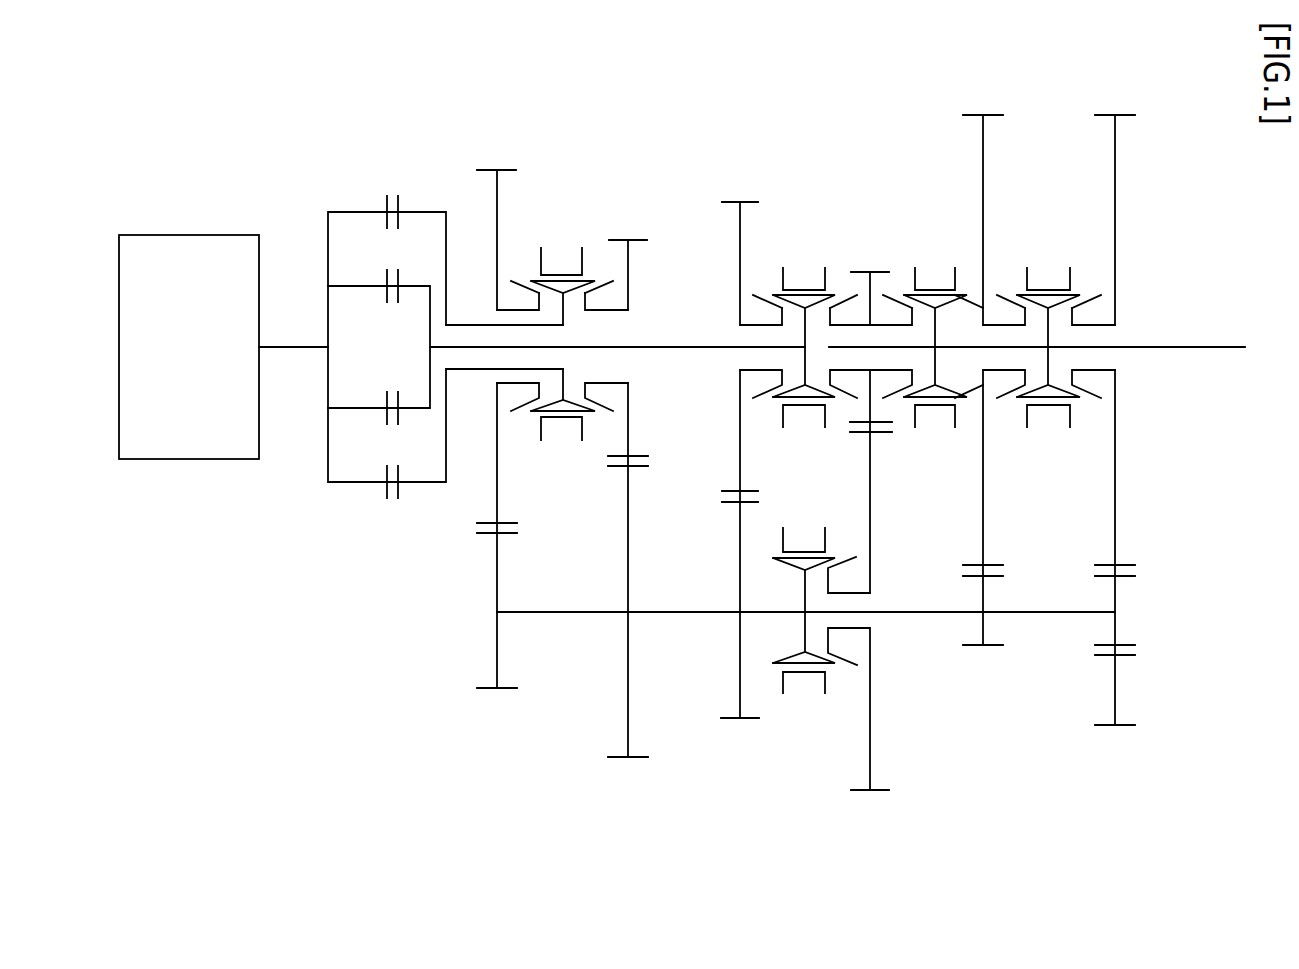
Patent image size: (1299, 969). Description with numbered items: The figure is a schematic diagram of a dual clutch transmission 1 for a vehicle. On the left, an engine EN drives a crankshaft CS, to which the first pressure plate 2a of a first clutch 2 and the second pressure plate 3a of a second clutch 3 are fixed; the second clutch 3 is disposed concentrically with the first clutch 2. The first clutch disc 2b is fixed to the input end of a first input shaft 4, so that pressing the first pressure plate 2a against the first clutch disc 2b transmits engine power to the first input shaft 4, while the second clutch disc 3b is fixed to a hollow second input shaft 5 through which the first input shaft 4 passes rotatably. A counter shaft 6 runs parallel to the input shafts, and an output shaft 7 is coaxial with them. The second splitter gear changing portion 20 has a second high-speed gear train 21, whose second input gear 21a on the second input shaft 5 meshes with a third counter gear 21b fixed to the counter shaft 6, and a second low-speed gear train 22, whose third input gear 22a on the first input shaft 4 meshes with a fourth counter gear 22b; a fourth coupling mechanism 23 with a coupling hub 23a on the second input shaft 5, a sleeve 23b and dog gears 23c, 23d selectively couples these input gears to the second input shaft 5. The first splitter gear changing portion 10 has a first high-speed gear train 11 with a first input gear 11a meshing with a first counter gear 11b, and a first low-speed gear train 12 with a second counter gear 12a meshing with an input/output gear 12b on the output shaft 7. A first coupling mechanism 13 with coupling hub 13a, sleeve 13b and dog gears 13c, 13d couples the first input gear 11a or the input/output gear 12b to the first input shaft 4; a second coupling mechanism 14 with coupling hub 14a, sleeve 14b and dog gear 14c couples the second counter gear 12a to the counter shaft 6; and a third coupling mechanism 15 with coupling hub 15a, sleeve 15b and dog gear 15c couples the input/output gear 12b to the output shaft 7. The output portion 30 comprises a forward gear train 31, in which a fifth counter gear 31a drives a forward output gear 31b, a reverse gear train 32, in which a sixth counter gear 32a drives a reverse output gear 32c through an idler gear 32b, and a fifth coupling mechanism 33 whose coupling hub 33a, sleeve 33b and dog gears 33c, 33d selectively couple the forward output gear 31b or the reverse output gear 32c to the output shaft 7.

The dual clutch transmission 1 is at (1198, 177).
The engine EN is at (189, 347).
The crankshaft CS is at (289, 343).
The first clutch 2 is at (379, 347).
The first pressure plate 2a is at (385, 400).
The first clutch disc 2b is at (404, 398).
The second clutch 3 is at (387, 368).
The second pressure plate 3a is at (385, 494).
The second clutch disc 3b is at (401, 493).
The first input shaft 4 is at (679, 346).
The second input shaft 5 is at (480, 323).
The counter shaft 6 is at (563, 610).
The output shaft 7 is at (1160, 346).
The first splitter gear changing portion 10 is at (816, 157).
The first high-speed gear train 11 is at (760, 447).
The first input gear 11a is at (753, 198).
The first counter gear 11b is at (747, 722).
The first low-speed gear train 12 is at (877, 468).
The second counter gear 12a is at (882, 786).
The input/output gear 12b is at (878, 268).
The first coupling mechanism 13 is at (803, 317).
The coupling hub 13a is at (830, 293).
The sleeve 13b is at (810, 278).
The dog gear 13c is at (765, 294).
The dog gear 13d is at (846, 400).
The second coupling mechanism 14 is at (807, 571).
The coupling hub 14a is at (787, 565).
The sleeve 14b is at (818, 545).
The dog gear 14c is at (845, 558).
The third coupling mechanism 15 is at (935, 299).
The coupling hub 15a is at (963, 296).
The sleeve 15b is at (948, 268).
The dog gear 15c is at (895, 296).
The second splitter gear changing portion 20 is at (574, 146).
The second high-speed gear train 21 is at (489, 435).
The second input gear 21a is at (503, 167).
The third counter gear 21b is at (502, 692).
The second low-speed gear train 22 is at (635, 477).
The third input gear 22a is at (643, 238).
The fourth counter gear 22b is at (632, 760).
The fourth coupling mechanism 23 is at (561, 322).
The coupling hub 23a is at (591, 280).
The sleeve 23b is at (577, 267).
The dog gear 23c is at (526, 281).
The dog gear 23d is at (596, 417).
The output portion 30 is at (1033, 176).
The forward gear train 31 is at (972, 385).
The fifth counter gear 31a is at (995, 648).
The forward output gear 31b is at (993, 112).
The reverse gear train 32 is at (1095, 426).
The sixth counter gear 32a is at (1110, 640).
The idler gear 32b is at (1125, 728).
The reverse output gear 32c is at (1122, 112).
The fifth coupling mechanism 33 is at (1048, 319).
The coupling hub 33a is at (1076, 290).
The sleeve 33b is at (1058, 267).
The dog gear 33c is at (998, 291).
The dog gear 33d is at (1091, 400).